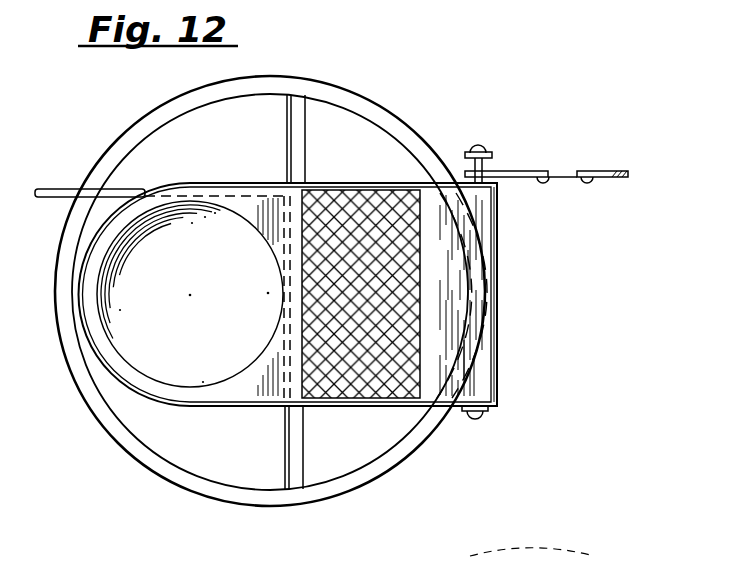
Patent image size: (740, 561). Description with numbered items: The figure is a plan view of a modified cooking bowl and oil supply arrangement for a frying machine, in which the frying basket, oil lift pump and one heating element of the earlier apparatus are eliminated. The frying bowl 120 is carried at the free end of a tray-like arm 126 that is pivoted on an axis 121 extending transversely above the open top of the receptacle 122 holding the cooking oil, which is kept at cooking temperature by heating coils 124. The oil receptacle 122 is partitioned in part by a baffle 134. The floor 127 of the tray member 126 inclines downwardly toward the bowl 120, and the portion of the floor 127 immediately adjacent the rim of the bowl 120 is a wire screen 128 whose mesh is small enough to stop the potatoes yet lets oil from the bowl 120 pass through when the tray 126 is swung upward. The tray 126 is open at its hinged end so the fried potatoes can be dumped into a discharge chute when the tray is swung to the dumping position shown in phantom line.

The frying bowl 120 is at (118, 343).
The axis 121 is at (482, 166).
The receptacle 122 is at (252, 506).
The heating coils 124 is at (127, 190).
The tray-like arm 126 is at (382, 408).
The floor 127 is at (447, 303).
The wire screen 128 is at (354, 205).
The baffle 134 is at (300, 467).